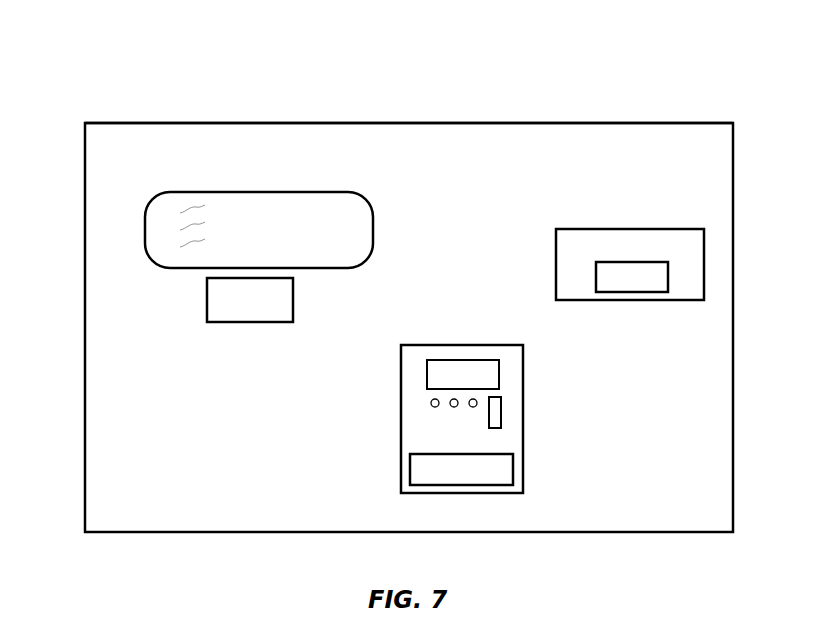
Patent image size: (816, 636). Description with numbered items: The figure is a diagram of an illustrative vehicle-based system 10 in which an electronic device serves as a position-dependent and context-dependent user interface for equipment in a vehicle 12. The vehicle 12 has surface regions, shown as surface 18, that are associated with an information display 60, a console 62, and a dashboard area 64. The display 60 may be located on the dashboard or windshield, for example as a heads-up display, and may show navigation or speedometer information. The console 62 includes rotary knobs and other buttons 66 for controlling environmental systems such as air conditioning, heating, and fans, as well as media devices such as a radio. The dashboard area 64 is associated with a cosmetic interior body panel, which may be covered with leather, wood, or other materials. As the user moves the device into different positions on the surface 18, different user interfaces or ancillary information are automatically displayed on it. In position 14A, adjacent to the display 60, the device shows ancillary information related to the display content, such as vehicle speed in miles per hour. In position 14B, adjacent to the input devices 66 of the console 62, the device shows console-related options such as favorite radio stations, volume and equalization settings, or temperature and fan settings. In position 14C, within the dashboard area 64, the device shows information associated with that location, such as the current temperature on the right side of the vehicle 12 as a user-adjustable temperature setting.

The vehicle display system 10 is at (106, 82).
The vehicle 12 is at (502, 123).
The surface 18 is at (308, 130).
The information display 60 is at (243, 205).
The console 62 is at (442, 390).
The dashboard area 64 is at (602, 236).
The buttons 66 is at (413, 415).
The position 14A is at (240, 325).
The position 14B is at (513, 472).
The position 14C is at (650, 292).